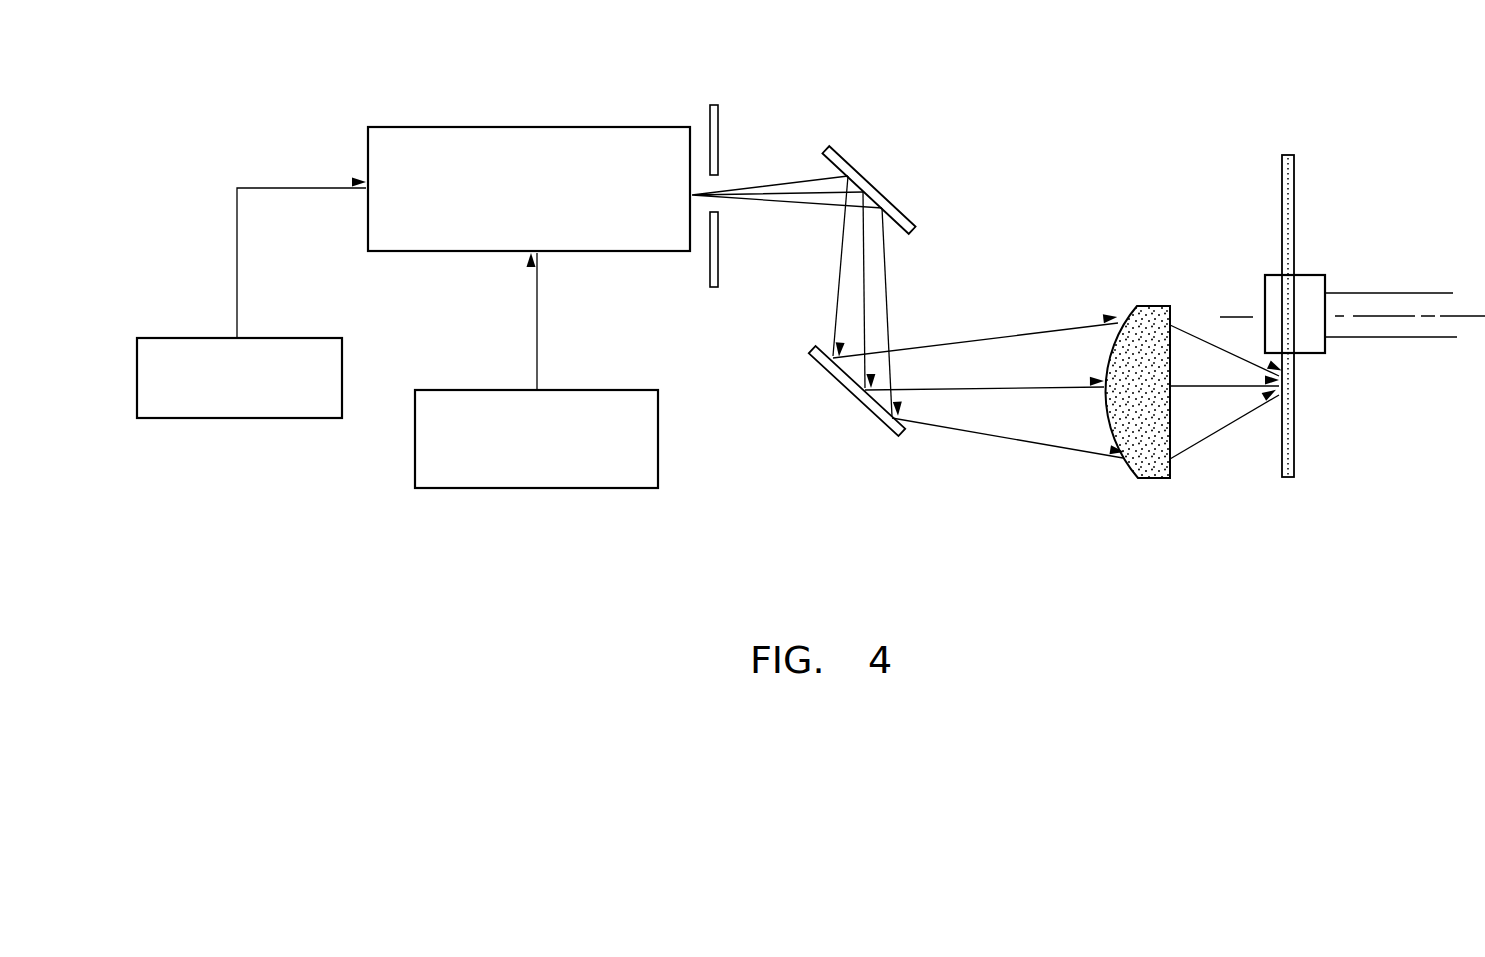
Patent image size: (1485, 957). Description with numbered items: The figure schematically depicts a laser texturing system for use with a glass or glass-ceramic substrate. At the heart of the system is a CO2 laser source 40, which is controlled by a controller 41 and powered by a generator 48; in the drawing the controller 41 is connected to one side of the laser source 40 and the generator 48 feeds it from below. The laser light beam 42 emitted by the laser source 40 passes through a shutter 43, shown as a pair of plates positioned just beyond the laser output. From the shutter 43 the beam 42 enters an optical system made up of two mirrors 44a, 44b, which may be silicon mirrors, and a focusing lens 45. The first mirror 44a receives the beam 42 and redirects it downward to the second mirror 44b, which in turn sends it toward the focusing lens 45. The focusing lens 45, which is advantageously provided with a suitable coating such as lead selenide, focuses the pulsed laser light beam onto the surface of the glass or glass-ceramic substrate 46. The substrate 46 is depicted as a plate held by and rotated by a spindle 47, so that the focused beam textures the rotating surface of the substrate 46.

The CO2 laser source 40 is at (523, 127).
The controller 41 is at (262, 418).
The laser light beam 42 is at (757, 185).
The shutter 43 is at (713, 103).
The mirror 44a is at (876, 192).
The mirror 44b is at (852, 393).
The focusing lens 45 is at (1152, 306).
The glass or glass-ceramic substrate 46 is at (1289, 478).
The spindle 47 is at (1325, 278).
The generator 48 is at (529, 488).